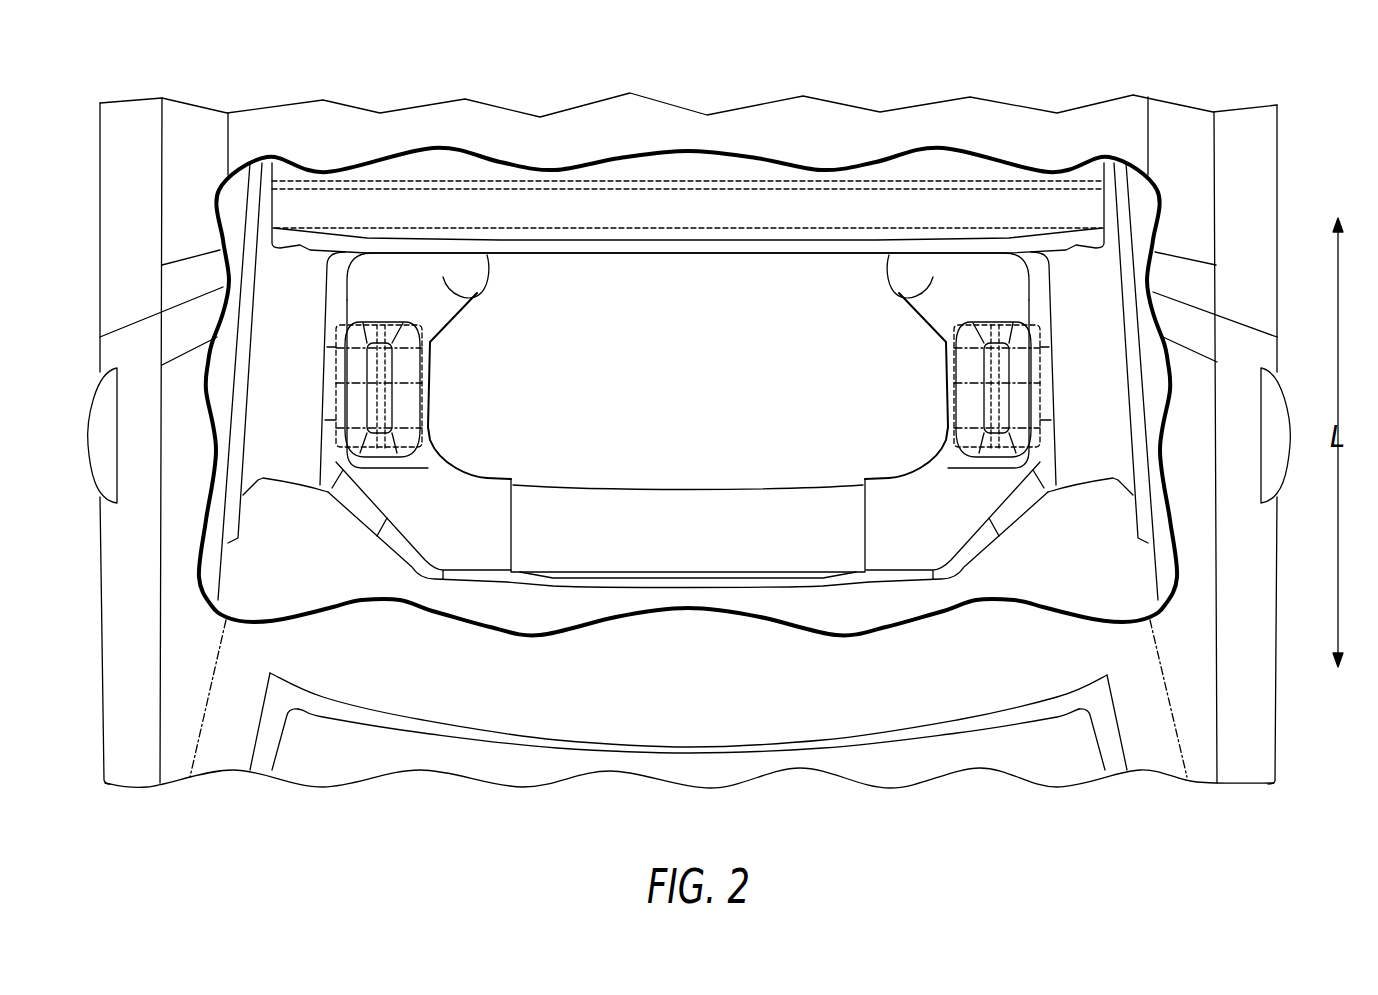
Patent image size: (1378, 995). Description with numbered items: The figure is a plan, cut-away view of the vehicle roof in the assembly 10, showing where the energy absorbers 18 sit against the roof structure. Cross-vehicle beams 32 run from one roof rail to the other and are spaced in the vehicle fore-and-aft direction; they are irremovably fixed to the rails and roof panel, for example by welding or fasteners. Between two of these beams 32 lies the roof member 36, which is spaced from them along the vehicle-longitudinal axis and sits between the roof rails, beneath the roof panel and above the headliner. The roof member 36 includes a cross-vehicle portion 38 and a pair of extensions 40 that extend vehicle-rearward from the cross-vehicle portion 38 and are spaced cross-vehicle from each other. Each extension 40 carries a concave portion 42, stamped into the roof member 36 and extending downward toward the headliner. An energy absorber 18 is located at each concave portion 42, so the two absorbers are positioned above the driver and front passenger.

The assembly 10 is at (1160, 54).
The energy absorber 18 is at (437, 340).
The beam 32 is at (655, 215).
The roof member 36 is at (663, 487).
The cross-vehicle portion 38 is at (713, 517).
The extension 40 is at (484, 296).
The concave portion 42 is at (390, 322).